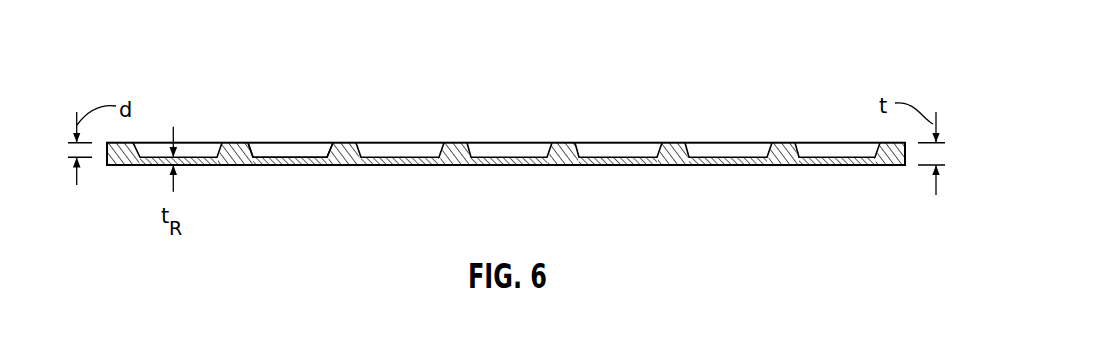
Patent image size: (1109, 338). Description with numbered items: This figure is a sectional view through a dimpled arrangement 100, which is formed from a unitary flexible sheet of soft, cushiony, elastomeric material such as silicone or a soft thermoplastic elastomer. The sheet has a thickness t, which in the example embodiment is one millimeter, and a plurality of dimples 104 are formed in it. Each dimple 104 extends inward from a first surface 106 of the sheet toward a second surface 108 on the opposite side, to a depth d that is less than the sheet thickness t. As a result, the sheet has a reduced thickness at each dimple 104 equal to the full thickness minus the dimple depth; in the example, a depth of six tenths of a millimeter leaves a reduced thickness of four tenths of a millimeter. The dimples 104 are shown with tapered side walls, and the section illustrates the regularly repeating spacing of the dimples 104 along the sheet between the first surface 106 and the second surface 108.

The dimpled arrangement 100 is at (174, 37).
The dimple 104 is at (294, 145).
The first surface 106 is at (452, 144).
The second surface 108 is at (451, 168).